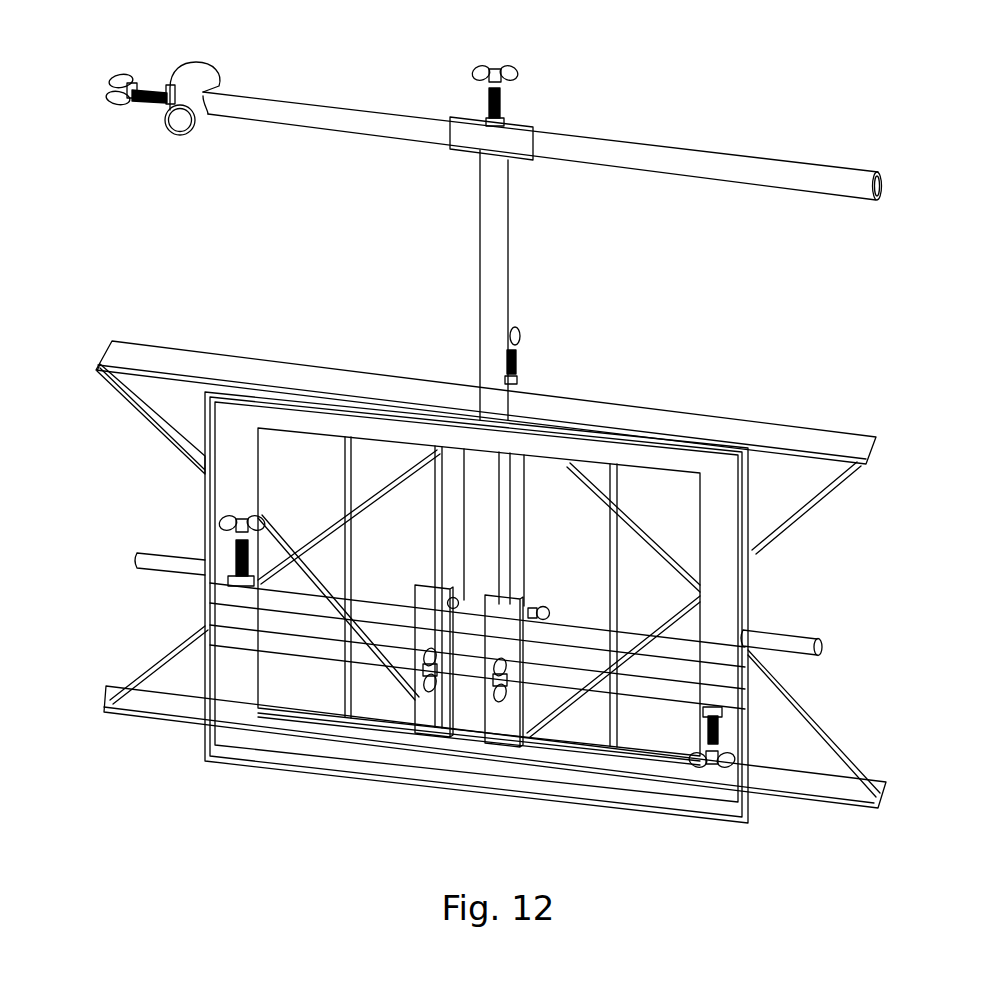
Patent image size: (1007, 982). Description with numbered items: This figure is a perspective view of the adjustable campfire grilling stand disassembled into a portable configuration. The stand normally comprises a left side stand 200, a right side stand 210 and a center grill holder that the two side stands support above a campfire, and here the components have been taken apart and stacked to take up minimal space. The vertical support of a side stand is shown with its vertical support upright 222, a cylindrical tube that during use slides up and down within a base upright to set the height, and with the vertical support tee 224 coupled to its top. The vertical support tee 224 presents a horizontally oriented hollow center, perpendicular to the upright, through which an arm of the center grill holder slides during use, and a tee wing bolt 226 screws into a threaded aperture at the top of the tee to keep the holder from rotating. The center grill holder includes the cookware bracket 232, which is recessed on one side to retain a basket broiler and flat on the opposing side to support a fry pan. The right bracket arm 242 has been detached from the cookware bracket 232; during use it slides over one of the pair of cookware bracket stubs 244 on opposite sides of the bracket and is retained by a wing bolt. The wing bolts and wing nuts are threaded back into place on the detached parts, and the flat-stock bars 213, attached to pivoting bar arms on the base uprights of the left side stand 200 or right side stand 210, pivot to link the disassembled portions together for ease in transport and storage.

The left side stand 200 is at (160, 702).
The right side stand 210 is at (133, 358).
The bar 213 is at (495, 725).
The vertical support upright 222 is at (325, 113).
The vertical support tee 224 is at (193, 77).
The tee wing bolt 226 is at (127, 77).
The cookware bracket 232 is at (350, 780).
The right bracket arm 242 is at (700, 690).
The cookware bracket stubs 244 is at (172, 562).